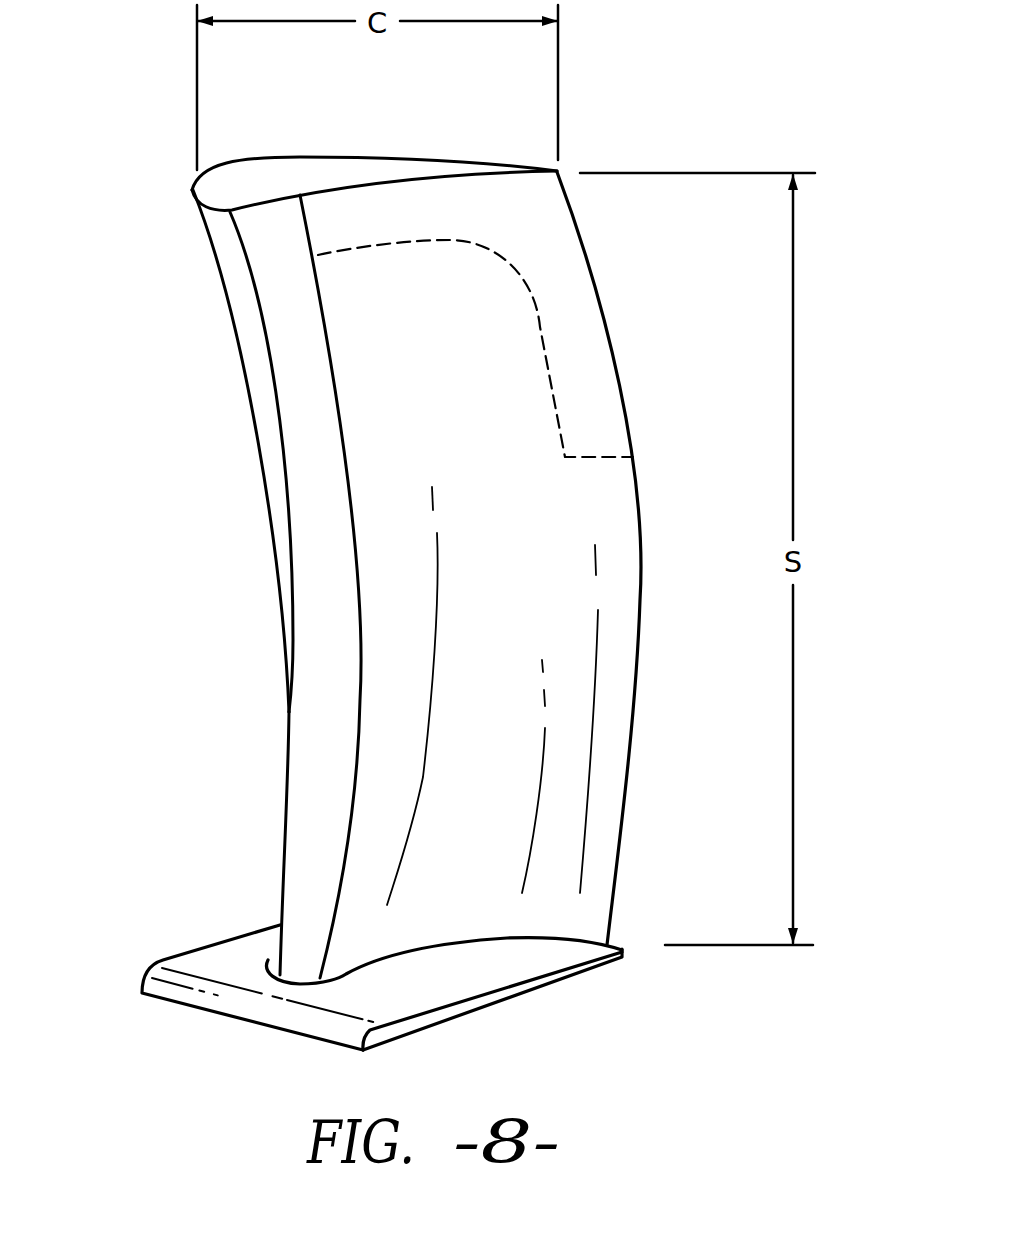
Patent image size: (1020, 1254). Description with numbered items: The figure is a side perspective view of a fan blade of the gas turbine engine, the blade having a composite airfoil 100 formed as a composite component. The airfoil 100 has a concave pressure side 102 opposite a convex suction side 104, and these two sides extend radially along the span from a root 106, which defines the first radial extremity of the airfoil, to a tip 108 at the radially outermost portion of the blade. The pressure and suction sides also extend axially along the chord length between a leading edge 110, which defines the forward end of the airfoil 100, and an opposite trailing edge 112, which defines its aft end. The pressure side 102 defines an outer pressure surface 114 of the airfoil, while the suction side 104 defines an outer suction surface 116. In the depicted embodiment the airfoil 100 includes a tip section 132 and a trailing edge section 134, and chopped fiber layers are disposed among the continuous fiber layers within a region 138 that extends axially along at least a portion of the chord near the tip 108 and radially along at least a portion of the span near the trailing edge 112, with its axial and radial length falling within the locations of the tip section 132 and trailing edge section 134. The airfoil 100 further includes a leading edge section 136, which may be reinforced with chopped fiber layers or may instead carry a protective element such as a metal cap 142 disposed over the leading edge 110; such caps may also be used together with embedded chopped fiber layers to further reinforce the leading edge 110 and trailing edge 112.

The airfoil 100 is at (158, 137).
The pressure side 102 is at (525, 484).
The suction side 104 is at (310, 131).
The root 106 is at (637, 946).
The tip 108 is at (572, 168).
The leading edge 110 is at (181, 249).
The trailing edge 112 is at (661, 623).
The outer pressure surface 114 is at (570, 712).
The outer suction surface 116 is at (280, 612).
The tip section 132 is at (407, 200).
The trailing edge section 134 is at (550, 245).
The leading edge section 136 is at (312, 832).
The region 138 is at (580, 352).
The metal cap 142 is at (262, 392).